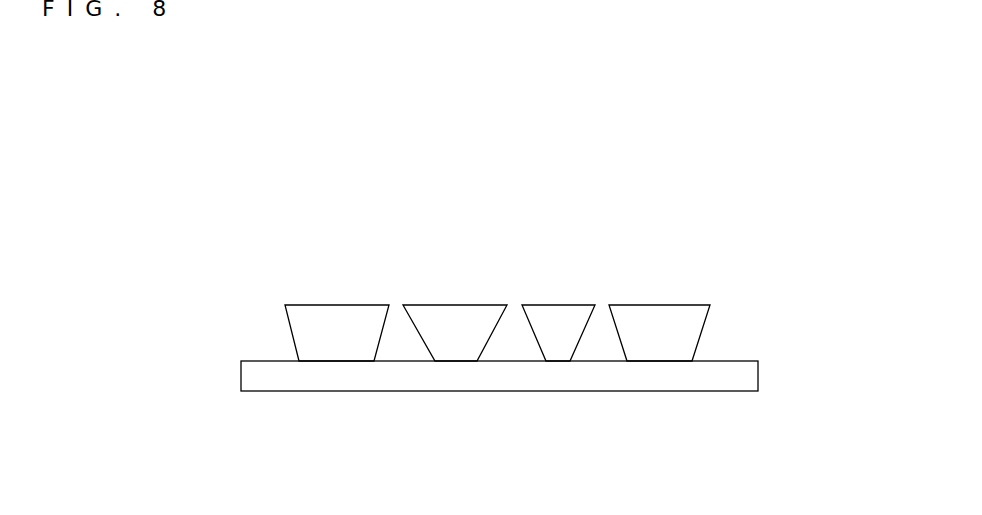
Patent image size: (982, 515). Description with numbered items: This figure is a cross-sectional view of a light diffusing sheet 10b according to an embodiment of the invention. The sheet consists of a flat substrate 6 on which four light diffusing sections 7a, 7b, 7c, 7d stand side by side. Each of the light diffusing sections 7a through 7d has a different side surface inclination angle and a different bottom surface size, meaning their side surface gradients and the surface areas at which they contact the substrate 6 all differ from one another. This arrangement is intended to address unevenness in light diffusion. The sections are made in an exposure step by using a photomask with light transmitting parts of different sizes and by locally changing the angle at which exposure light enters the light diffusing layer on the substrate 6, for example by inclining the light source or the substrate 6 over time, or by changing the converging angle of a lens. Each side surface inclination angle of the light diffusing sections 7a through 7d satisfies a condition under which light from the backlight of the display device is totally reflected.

The substrate 6 is at (248, 375).
The light diffusing section 7a is at (338, 315).
The light diffusing section 7b is at (456, 315).
The light diffusing section 7c is at (559, 315).
The light diffusing section 7d is at (660, 315).
The light diffusing sheet 10b is at (773, 408).